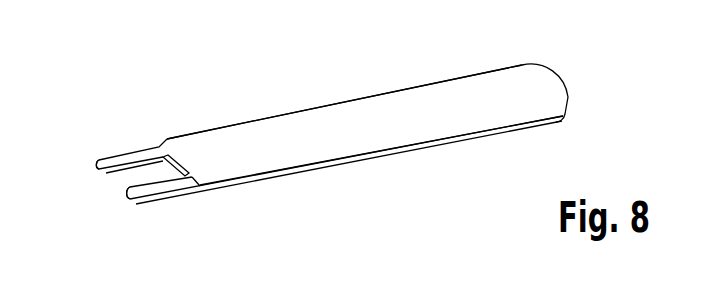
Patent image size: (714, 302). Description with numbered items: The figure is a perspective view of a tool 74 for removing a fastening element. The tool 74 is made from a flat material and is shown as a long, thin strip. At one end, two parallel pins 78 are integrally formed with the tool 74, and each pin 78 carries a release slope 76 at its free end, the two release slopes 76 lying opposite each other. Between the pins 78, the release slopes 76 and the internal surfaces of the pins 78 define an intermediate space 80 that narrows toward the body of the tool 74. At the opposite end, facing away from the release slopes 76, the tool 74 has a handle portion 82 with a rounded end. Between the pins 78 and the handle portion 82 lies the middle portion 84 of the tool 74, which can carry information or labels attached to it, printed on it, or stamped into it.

The tool 74 is at (297, 134).
The release slopes 76 is at (110, 173).
The pins 78 is at (127, 157).
The intermediate space 80 is at (177, 157).
The handle portion 82 is at (545, 95).
The middle portion 84 is at (353, 130).